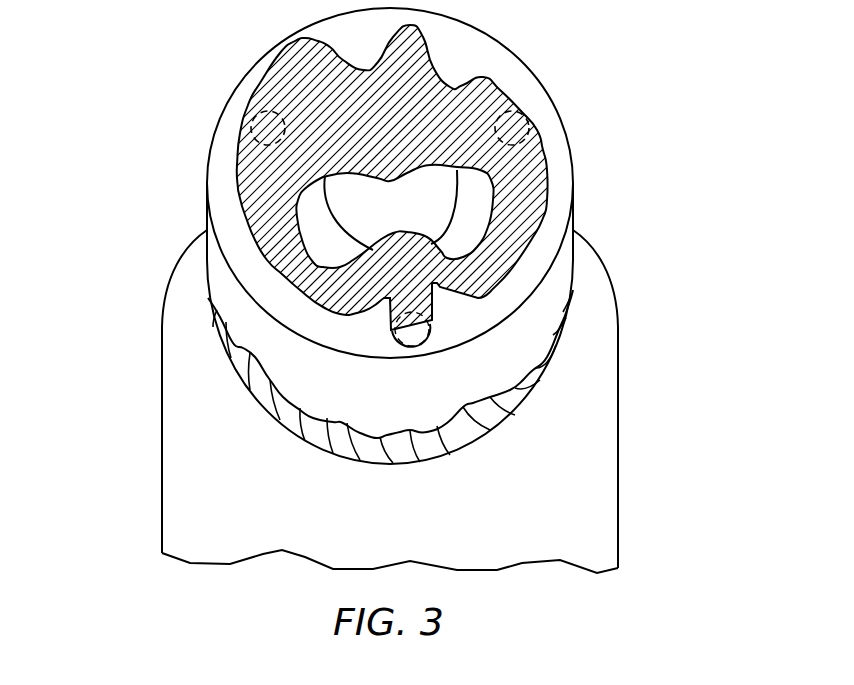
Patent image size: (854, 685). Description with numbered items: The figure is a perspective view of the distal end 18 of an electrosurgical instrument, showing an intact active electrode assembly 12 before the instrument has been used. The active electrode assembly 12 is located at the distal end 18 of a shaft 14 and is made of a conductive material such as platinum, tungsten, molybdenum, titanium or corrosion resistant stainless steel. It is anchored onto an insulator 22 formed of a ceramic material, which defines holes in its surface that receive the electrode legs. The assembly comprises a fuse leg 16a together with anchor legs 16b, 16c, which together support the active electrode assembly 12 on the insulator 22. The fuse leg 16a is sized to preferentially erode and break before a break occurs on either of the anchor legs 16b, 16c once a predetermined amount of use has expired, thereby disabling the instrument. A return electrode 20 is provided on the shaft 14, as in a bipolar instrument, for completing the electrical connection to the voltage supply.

The active electrode assembly 12 is at (490, 88).
The shaft 14 is at (593, 508).
The fuse leg 16a is at (257, 117).
The anchor leg 16b is at (527, 126).
The anchor leg 16c is at (432, 332).
The distal end 18 is at (135, 405).
The return electrode 20 is at (600, 318).
The insulator 22 is at (565, 190).